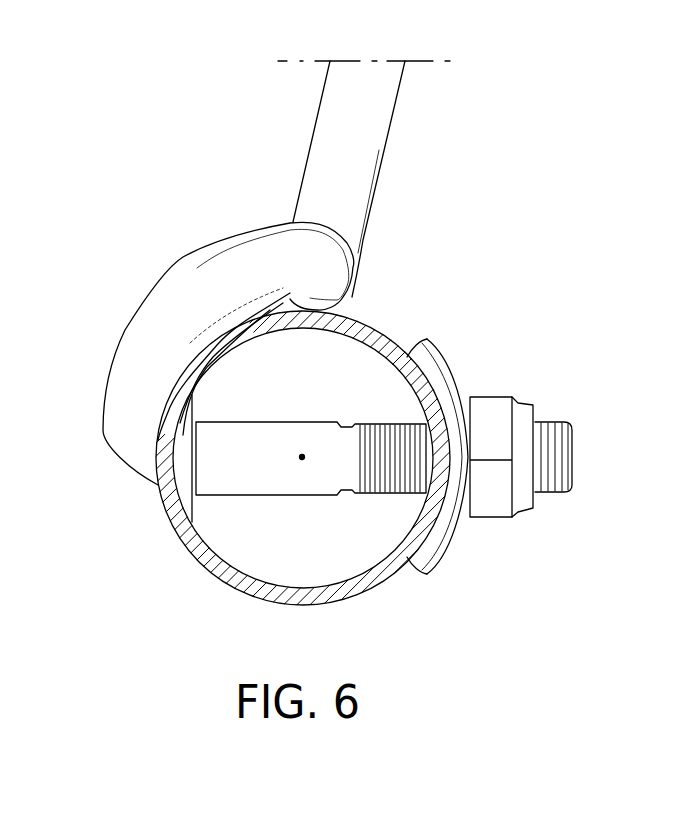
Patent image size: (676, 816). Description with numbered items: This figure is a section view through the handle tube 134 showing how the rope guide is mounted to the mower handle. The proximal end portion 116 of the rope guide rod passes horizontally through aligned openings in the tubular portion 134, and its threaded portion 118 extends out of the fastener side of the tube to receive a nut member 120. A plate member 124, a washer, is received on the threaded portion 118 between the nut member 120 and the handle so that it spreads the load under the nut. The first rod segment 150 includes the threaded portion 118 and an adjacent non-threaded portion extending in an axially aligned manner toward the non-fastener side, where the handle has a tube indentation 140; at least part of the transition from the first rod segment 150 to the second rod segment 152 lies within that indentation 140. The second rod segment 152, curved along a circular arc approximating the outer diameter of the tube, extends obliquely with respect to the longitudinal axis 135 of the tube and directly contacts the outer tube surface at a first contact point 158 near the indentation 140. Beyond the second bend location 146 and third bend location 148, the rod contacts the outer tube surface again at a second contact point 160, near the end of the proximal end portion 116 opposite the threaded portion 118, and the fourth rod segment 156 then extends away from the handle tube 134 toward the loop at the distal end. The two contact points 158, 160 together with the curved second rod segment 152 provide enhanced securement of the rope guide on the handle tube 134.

The proximal end portion 116 is at (411, 468).
The threaded portion 118 is at (573, 460).
The nut member 120 is at (497, 403).
The plate member 124 is at (448, 355).
The tubular portion 134 is at (202, 570).
The longitudinal axis 135 is at (302, 457).
The tube indentation 140 is at (207, 417).
The second bend location 146 is at (333, 262).
The third bend location 148 is at (360, 277).
The first rod segment 150 is at (268, 428).
The second rod segment 152 is at (140, 313).
The fourth rod segment 156 is at (383, 107).
The first contact point 158 is at (183, 365).
The second contact point 160 is at (330, 300).